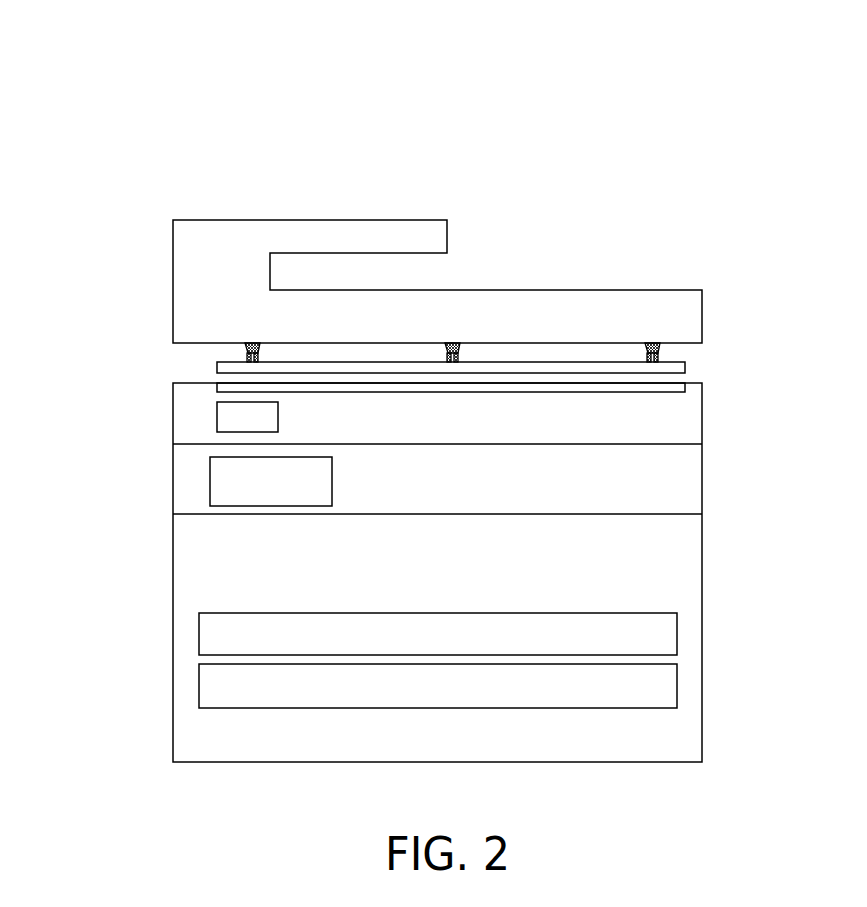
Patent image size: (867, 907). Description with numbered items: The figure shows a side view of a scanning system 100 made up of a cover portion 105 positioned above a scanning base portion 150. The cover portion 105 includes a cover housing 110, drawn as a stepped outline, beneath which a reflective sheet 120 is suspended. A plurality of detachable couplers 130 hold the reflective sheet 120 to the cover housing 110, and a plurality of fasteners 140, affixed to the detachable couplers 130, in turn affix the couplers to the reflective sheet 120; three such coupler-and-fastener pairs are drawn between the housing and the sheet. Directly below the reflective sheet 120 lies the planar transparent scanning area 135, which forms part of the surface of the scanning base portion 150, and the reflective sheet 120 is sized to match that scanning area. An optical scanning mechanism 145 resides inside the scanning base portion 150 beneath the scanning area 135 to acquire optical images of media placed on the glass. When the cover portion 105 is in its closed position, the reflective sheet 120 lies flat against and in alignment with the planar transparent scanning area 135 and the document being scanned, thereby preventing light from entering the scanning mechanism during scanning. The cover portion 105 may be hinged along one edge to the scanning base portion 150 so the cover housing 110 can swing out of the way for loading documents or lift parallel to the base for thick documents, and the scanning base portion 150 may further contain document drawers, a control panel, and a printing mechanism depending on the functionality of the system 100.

The system 100 is at (197, 110).
The cover portion 105 is at (145, 270).
The cover housing 110 is at (687, 289).
The reflective sheet 120 is at (687, 370).
The detachable couplers 130 is at (255, 342).
The planar transparent scanning area 135 is at (683, 385).
The fasteners 140 is at (245, 353).
The optical scanning mechanism 145 is at (215, 417).
The scanning base portion 150 is at (145, 497).